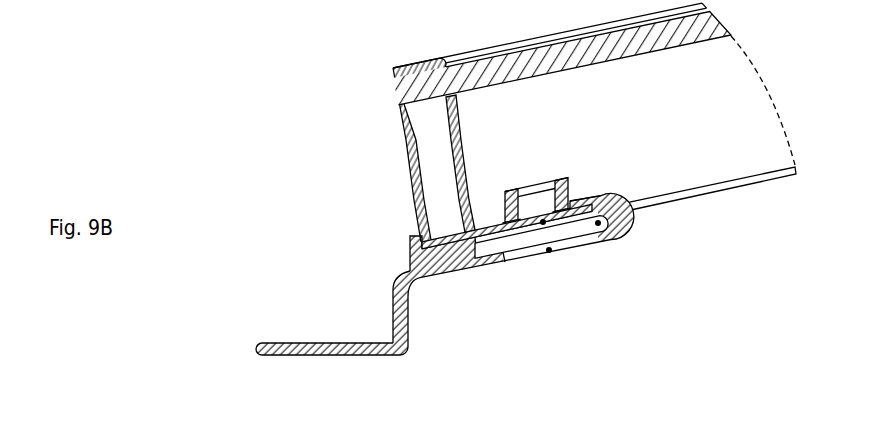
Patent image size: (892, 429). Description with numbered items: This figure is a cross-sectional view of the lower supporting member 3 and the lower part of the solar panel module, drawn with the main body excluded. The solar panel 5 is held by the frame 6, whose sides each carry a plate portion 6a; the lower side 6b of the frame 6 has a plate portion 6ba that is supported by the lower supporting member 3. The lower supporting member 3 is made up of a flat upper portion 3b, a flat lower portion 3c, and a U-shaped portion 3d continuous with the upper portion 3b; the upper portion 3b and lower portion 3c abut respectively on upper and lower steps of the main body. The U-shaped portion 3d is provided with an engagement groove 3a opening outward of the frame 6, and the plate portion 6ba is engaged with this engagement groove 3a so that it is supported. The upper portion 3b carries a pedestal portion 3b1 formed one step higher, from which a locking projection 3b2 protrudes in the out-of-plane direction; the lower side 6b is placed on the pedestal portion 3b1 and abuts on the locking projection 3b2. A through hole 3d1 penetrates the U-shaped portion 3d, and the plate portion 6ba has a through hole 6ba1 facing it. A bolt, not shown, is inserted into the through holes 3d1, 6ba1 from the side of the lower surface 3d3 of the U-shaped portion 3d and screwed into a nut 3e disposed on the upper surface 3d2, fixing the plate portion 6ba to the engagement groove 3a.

The lower supporting member 3 is at (636, 162).
The engagement groove 3a is at (598, 223).
The upper portion 3b is at (487, 264).
The pedestal portion 3b1 is at (452, 262).
The locking projection 3b2 is at (416, 238).
The lower portion 3c is at (320, 343).
The U-shaped portion 3d is at (645, 218).
The through hole 3d1 is at (549, 250).
The upper surface 3d2 is at (582, 196).
The lower surface 3d3 is at (587, 245).
The nut 3e is at (566, 182).
The solar panel 5 is at (570, 69).
The frame 6 is at (505, 122).
The plate portion 6a is at (507, 194).
The lower side 6b is at (373, 143).
The plate portion 6ba is at (497, 232).
The through hole 6ba1 is at (543, 222).